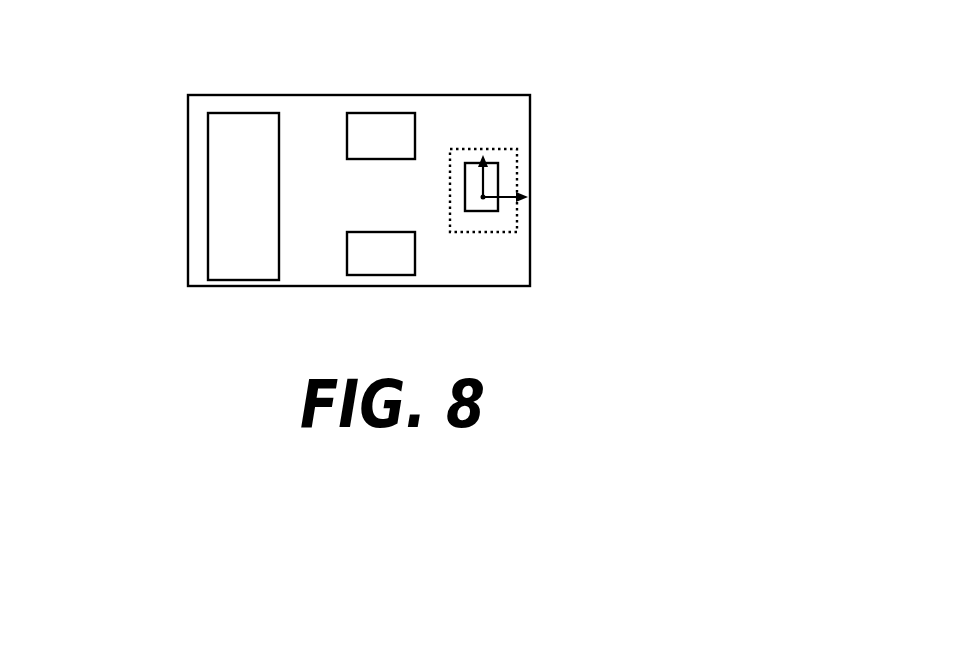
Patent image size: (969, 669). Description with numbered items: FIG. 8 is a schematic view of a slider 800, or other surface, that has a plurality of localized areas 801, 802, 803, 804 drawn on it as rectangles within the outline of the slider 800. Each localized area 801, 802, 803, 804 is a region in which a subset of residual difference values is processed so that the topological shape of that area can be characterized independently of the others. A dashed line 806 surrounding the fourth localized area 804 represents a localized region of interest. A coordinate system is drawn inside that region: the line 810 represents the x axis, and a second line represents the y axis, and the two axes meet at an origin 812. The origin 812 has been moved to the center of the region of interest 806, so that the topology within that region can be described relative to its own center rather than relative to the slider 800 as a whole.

The slider 800 is at (162, 151).
The localized area 801 is at (242, 113).
The localized area 802 is at (372, 113).
The localized area 803 is at (380, 275).
The localized area 804 is at (463, 172).
The localized region of interest 806 is at (516, 124).
The x axis 810 is at (485, 186).
The origin 812 is at (484, 199).